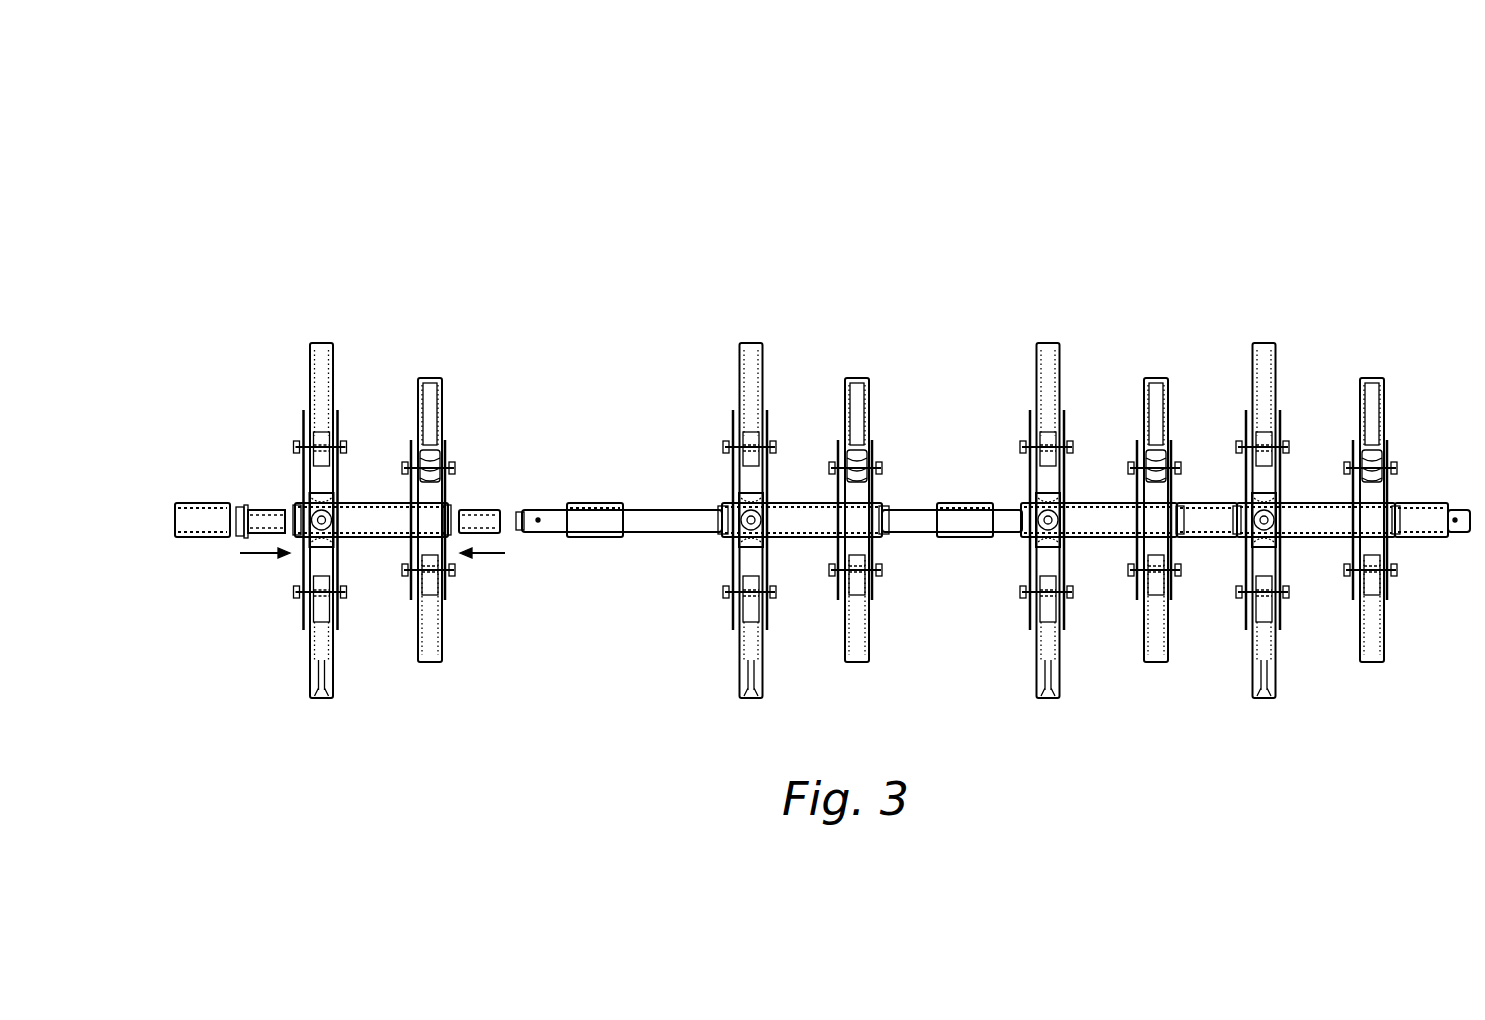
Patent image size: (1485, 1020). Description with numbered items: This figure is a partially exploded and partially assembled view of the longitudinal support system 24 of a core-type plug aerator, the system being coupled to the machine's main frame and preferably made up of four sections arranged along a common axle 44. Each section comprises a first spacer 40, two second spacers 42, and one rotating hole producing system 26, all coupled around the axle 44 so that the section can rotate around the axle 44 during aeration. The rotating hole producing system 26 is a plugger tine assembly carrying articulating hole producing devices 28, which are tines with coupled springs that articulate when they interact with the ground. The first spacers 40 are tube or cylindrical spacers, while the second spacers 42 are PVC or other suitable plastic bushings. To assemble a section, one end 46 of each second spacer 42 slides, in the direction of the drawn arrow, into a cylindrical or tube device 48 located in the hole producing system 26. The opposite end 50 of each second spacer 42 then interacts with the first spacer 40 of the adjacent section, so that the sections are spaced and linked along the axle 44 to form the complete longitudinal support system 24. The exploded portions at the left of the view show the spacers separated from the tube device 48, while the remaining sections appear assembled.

The longitudinal support system 24 is at (600, 196).
The rotating hole producing system 26 is at (360, 328).
The articulating hole producing device 28 is at (318, 362).
The first spacer 40 is at (207, 523).
The second spacer 42 is at (270, 518).
The axle 44 is at (645, 523).
The one end of the second spacer 46 is at (289, 520).
The cylindrical or tube device 48 is at (383, 503).
The opposite end of the second spacer 50 is at (243, 523).